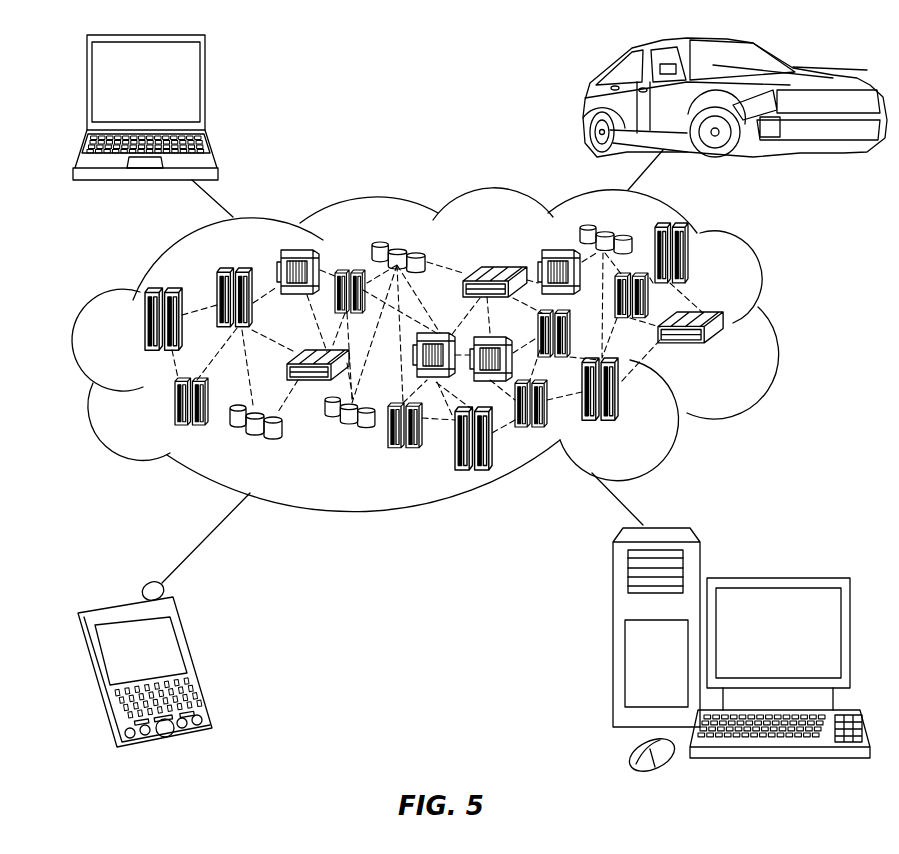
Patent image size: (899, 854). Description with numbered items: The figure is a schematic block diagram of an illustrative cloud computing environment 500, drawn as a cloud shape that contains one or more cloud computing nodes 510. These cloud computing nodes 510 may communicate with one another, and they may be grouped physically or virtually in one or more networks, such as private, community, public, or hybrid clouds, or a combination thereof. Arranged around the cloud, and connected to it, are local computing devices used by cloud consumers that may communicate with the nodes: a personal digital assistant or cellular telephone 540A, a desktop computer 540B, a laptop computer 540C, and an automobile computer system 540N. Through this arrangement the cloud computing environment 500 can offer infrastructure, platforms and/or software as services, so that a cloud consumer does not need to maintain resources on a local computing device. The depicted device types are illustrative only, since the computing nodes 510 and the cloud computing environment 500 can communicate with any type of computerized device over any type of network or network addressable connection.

The cloud computing environment 500 is at (453, 350).
The cloud computing nodes 510 is at (736, 357).
The personal digital assistant (PDA) or cellular telephone 540A is at (198, 660).
The desktop computer 540B is at (775, 578).
The laptop computer 540C is at (207, 88).
The automobile computer system 540N is at (585, 100).